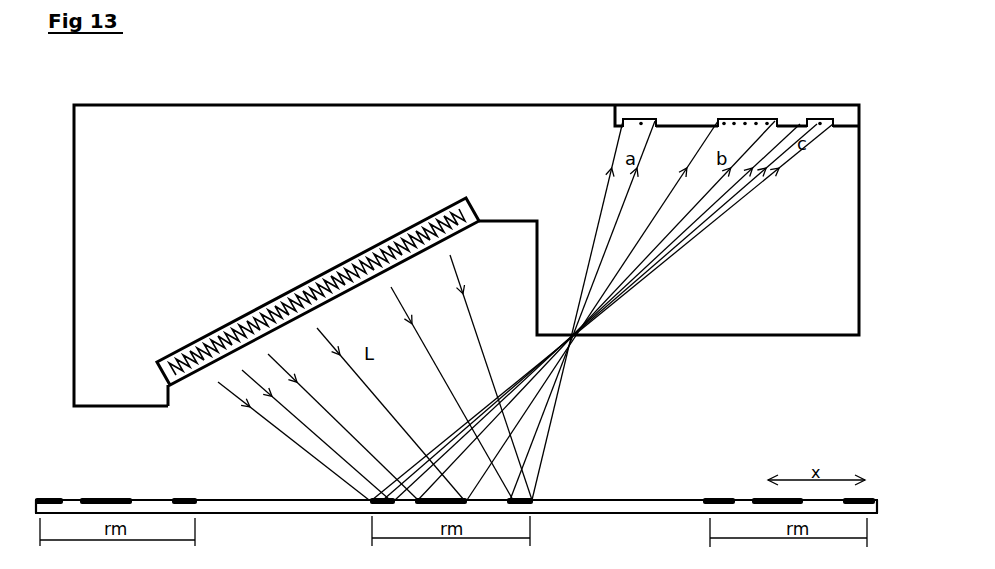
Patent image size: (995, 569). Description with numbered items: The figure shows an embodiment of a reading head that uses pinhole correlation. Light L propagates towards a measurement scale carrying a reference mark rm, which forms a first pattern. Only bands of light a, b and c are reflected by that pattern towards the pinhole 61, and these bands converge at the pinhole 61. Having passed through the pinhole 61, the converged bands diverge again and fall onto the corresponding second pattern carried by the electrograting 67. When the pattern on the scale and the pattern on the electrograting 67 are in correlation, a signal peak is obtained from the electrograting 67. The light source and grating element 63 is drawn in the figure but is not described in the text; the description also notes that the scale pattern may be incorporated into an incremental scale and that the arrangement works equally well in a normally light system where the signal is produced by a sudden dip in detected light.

The pinhole 61 is at (578, 341).
The light source with diffraction grating 63 is at (270, 308).
The electrograting 67 is at (686, 115).